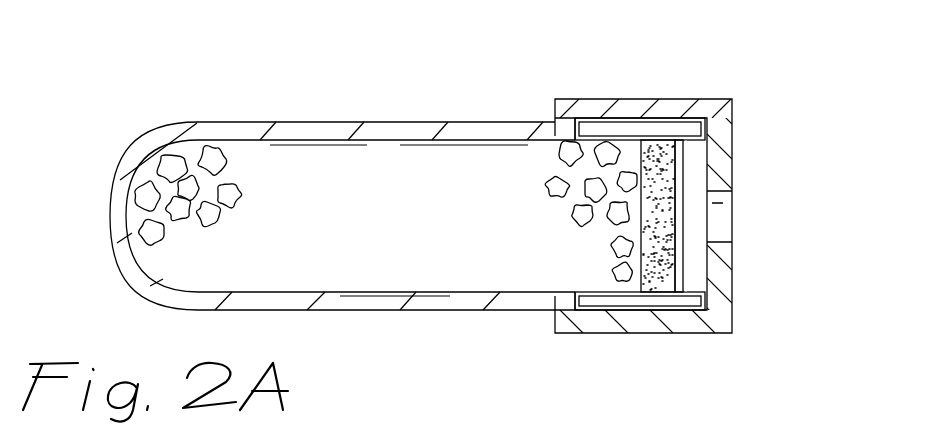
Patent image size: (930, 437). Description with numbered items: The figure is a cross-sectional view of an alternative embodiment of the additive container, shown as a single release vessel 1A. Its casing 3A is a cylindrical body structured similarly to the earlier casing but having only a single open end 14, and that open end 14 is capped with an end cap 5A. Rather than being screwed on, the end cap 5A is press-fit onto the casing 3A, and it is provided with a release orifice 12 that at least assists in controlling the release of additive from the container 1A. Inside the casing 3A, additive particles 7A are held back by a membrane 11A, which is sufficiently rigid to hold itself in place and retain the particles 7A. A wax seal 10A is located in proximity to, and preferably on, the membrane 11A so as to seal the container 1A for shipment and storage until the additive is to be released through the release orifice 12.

The container 1A is at (460, 331).
The casing 3A is at (411, 130).
The end cap 5A is at (663, 105).
The particles 7A is at (558, 176).
The wax seal 10A is at (683, 170).
The membrane 11A is at (653, 273).
The release orifice 12 is at (723, 223).
The single open end 14 is at (692, 268).